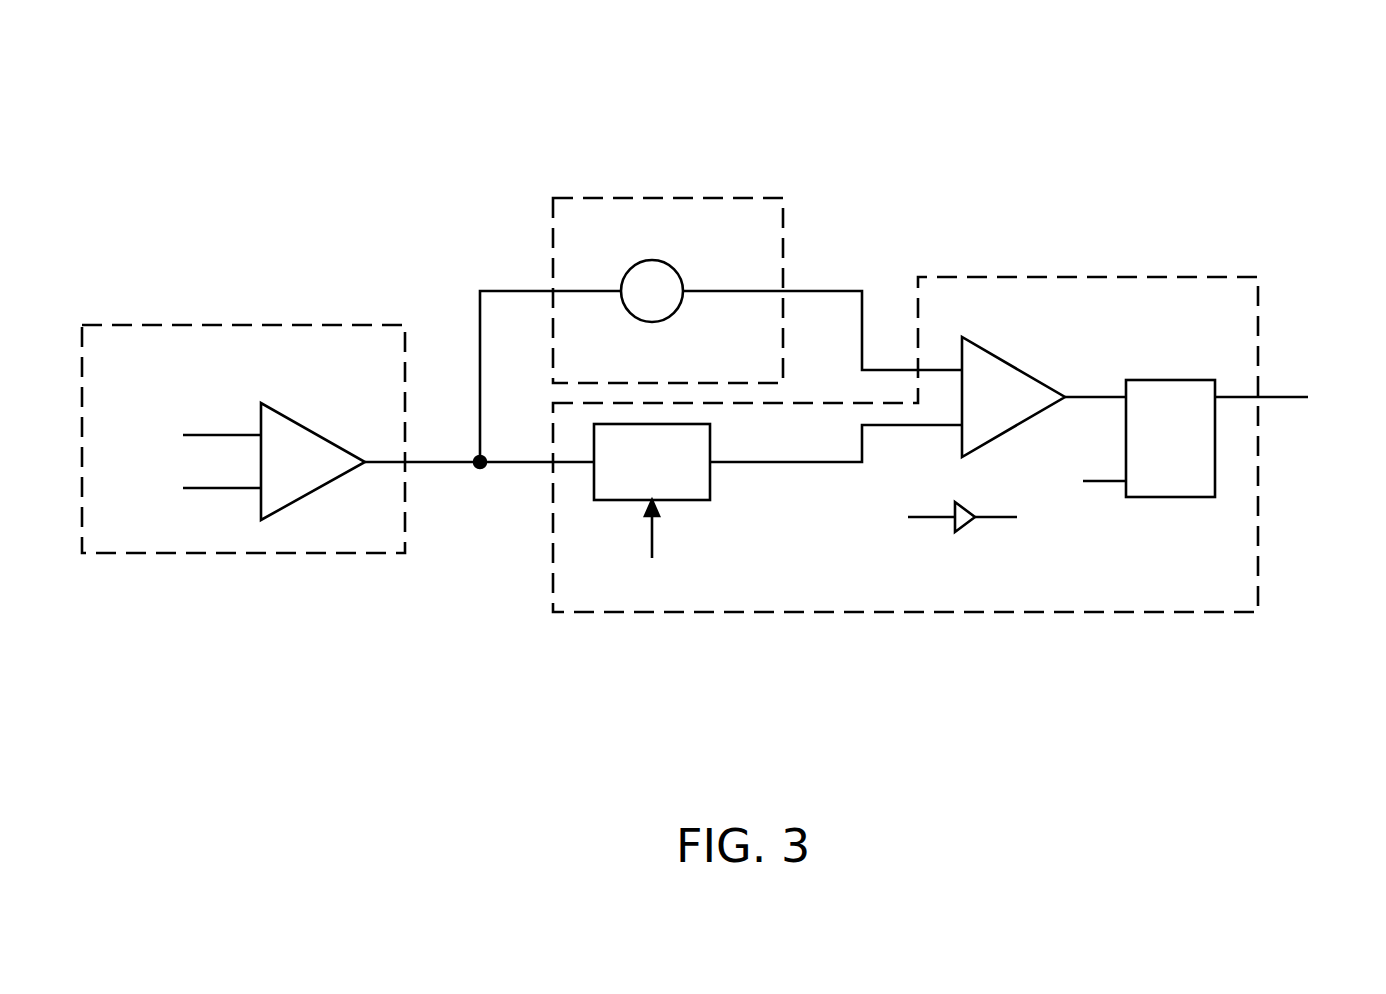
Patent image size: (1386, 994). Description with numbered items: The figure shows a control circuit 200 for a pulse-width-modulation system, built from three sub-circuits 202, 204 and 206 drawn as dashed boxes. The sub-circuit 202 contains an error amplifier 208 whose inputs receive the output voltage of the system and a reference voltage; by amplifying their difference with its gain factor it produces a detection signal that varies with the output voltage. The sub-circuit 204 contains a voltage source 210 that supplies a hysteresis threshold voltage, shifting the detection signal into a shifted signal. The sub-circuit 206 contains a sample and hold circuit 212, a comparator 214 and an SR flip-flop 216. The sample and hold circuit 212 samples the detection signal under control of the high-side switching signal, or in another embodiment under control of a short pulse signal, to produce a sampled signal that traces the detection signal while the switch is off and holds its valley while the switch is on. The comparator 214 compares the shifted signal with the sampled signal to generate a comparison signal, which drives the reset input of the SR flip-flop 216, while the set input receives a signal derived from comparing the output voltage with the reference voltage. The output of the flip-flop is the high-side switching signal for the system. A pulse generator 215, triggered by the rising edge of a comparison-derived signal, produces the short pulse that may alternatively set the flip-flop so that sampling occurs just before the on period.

The control circuit 200 is at (1297, 146).
The sub-circuit 202 is at (243, 396).
The sub-circuit 204 is at (668, 248).
The sub-circuit 206 is at (953, 399).
The error amplifier 208 is at (311, 430).
The voltage source 210 is at (676, 306).
The sample and hold circuit 212 is at (712, 482).
The comparator 214 is at (1010, 365).
The pulse generator 215 is at (970, 525).
The SR flip-flop 216 is at (1172, 380).